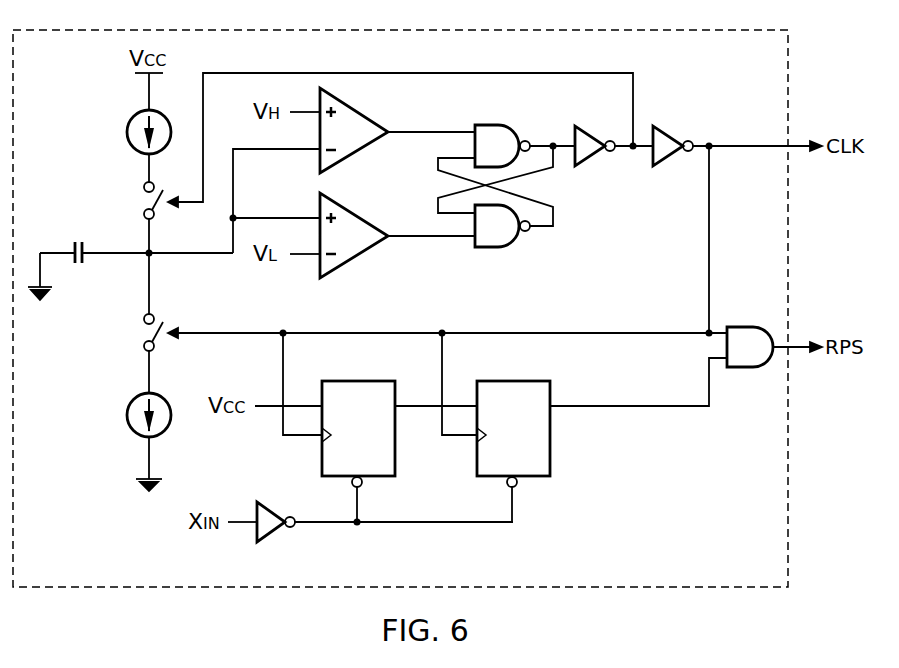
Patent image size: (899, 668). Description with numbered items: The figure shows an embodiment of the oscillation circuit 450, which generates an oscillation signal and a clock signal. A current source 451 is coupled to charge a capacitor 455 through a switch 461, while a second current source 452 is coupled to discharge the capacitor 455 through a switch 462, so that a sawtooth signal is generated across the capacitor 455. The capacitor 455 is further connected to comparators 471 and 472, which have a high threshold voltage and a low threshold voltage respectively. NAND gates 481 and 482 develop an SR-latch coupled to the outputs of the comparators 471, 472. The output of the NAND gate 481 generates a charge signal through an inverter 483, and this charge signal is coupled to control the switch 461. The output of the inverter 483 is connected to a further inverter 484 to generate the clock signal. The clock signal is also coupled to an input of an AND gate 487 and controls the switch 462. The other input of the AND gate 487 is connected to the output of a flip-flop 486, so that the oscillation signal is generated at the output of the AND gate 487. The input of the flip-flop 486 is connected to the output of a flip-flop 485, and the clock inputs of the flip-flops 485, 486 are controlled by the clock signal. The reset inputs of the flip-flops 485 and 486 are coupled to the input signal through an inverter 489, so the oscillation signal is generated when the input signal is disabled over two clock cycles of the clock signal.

The oscillation circuit 450 is at (787, 62).
The current source 451 is at (127, 132).
The current source 452 is at (127, 419).
The capacitor 455 is at (77, 241).
The switch 461 is at (140, 203).
The switch 462 is at (140, 337).
The comparator 471 is at (362, 158).
The comparator 472 is at (362, 262).
The NAND gate 481 is at (494, 123).
The NAND gate 482 is at (494, 250).
The inverter 483 is at (592, 160).
The inverter 484 is at (668, 160).
The flip-flop 485 is at (397, 466).
The flip-flop 486 is at (552, 466).
The AND gate 487 is at (745, 370).
The inverter 489 is at (273, 535).